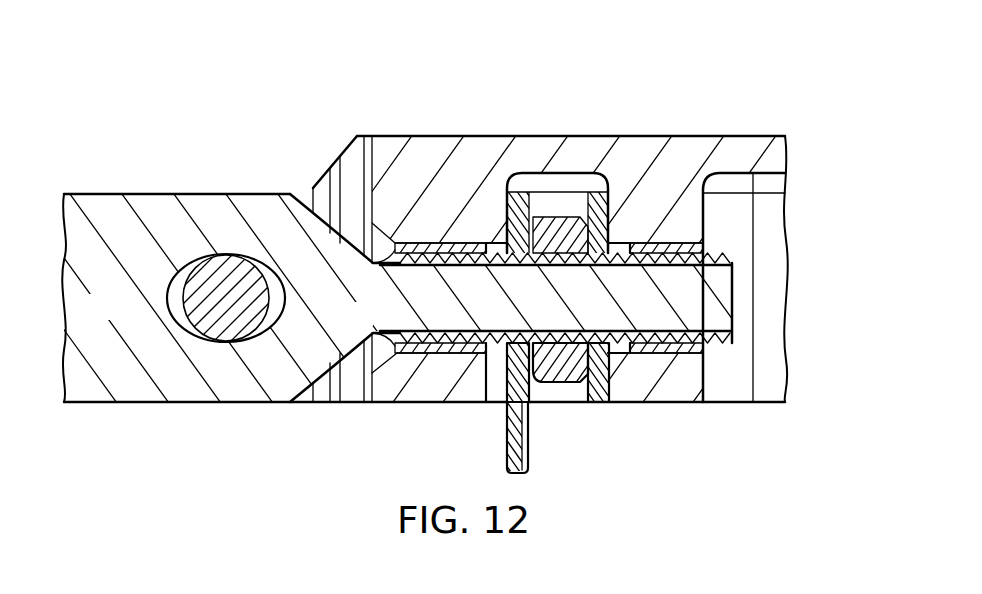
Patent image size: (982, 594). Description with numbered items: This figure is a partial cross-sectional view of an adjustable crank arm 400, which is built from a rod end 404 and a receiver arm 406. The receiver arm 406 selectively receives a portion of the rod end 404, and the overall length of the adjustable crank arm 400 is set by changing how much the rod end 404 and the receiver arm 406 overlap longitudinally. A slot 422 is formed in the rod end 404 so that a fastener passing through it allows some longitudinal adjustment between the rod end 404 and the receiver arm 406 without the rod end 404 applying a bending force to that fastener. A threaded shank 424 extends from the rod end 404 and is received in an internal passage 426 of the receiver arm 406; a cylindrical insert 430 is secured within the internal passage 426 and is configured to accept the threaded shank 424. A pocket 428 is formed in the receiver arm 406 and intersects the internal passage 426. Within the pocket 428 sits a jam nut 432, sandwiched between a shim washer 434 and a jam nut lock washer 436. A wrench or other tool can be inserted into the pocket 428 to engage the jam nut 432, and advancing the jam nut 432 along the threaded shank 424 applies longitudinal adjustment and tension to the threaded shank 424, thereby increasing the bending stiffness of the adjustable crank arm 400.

The adjustable crank arm 400 is at (672, 60).
The rod end 404 is at (150, 193).
The receiver arm 406 is at (697, 136).
The slot 422 is at (173, 296).
The threaded shank 424 is at (720, 288).
The internal passage 426 is at (398, 258).
The pocket 428 is at (568, 183).
The cylindrical insert 430 is at (470, 247).
The jam nut 432 is at (553, 385).
The shim washer 434 is at (600, 390).
The jam nut lock washer 436 is at (507, 438).